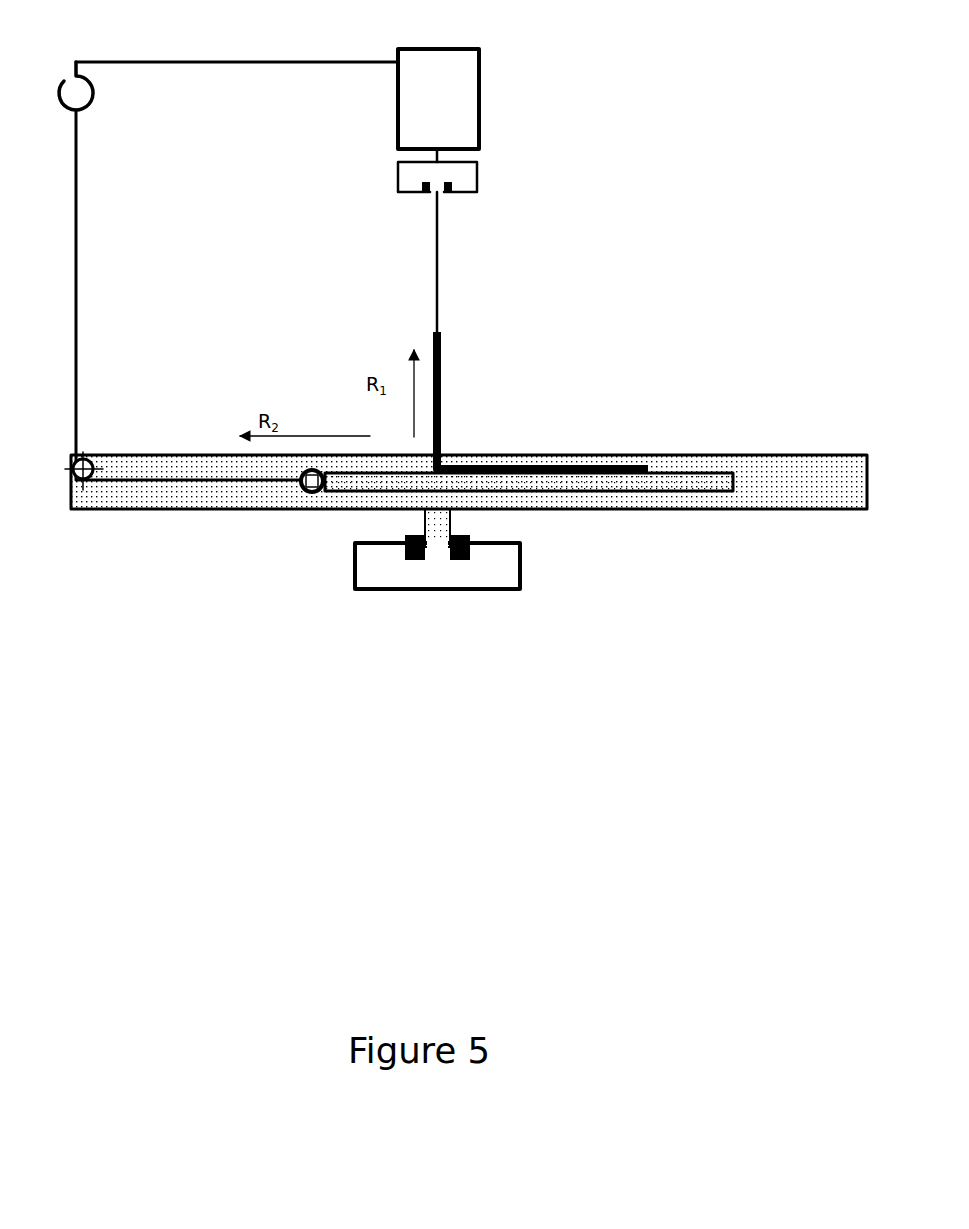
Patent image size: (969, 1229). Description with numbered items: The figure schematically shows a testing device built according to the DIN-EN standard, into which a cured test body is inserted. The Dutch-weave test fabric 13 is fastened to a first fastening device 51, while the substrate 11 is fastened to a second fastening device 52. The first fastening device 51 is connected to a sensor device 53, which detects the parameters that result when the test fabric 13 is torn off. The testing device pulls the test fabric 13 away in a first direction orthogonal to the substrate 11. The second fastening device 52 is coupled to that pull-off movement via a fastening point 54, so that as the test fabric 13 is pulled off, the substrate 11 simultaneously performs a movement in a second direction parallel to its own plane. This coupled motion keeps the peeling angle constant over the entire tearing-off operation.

The substrate 11 is at (698, 470).
The test fabric 13 is at (443, 404).
The first fastening device 51 is at (482, 176).
The second fastening device 52 is at (298, 500).
The sensor device 53 is at (438, 99).
The fastening point 54 is at (98, 93).